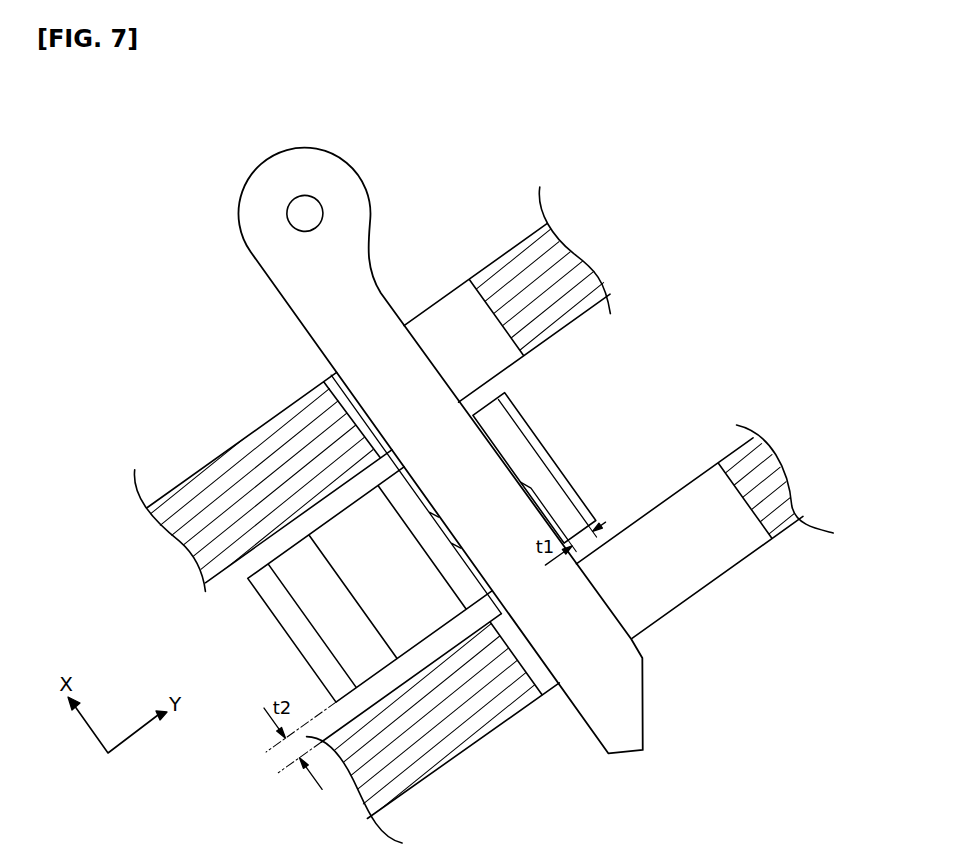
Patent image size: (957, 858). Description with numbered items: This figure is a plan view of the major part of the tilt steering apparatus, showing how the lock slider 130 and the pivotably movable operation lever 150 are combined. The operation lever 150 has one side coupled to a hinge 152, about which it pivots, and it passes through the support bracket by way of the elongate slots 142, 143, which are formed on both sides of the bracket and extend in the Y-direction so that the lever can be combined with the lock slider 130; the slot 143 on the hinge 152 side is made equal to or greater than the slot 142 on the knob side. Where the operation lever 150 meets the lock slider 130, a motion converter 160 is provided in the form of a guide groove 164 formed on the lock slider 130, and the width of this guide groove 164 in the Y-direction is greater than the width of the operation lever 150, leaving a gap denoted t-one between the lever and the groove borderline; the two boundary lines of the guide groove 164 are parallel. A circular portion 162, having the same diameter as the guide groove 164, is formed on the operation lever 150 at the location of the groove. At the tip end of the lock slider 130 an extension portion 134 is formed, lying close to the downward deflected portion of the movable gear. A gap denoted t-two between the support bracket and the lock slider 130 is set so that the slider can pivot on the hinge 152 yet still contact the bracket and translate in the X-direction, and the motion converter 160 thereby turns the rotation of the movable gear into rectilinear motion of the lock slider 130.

The motion converter 160 is at (410, 180).
The hinge 152 is at (305, 213).
The slot 143 is at (435, 327).
The slot 142 is at (677, 585).
The operation lever 150 is at (582, 710).
The lock slider 130 is at (270, 590).
The guide groove 164 is at (383, 452).
The circular portion 162 is at (498, 483).
The extension portion 134 is at (580, 493).